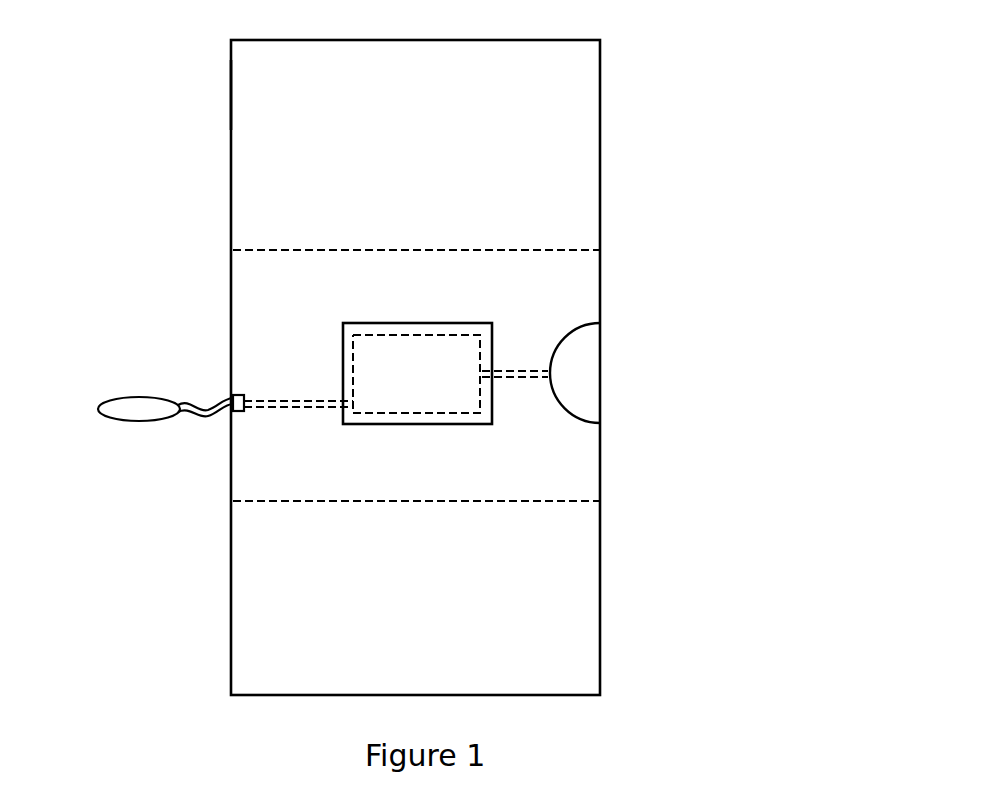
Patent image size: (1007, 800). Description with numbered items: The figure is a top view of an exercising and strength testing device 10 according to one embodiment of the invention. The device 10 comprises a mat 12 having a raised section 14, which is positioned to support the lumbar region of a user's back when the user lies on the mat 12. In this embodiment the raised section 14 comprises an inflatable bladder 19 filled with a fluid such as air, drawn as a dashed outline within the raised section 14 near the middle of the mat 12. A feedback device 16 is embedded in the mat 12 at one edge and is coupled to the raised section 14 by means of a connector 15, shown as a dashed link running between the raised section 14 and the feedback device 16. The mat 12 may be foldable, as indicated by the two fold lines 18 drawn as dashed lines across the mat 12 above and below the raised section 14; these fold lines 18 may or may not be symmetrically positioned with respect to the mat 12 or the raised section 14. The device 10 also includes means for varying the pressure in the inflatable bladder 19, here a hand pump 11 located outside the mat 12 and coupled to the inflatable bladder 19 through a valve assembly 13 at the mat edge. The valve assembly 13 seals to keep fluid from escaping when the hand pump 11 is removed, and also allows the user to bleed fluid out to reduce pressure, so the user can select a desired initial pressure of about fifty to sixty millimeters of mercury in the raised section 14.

The device 10 is at (676, 106).
The hand pump 11 is at (137, 423).
The mat 12 is at (231, 110).
The valve assembly 13 is at (233, 393).
The raised section 14 is at (343, 374).
The connector 15 is at (523, 371).
The feedback device 16 is at (583, 425).
The fold lines 18 is at (258, 250).
The inflatable bladder 19 is at (478, 342).